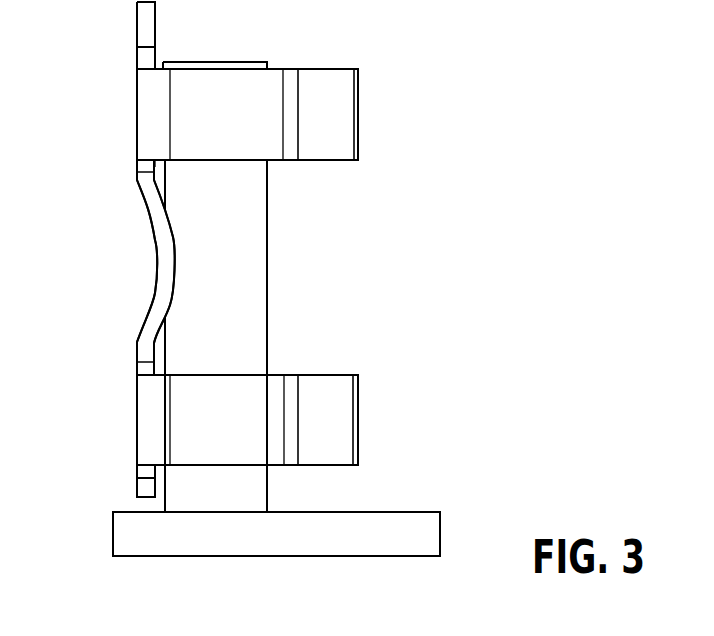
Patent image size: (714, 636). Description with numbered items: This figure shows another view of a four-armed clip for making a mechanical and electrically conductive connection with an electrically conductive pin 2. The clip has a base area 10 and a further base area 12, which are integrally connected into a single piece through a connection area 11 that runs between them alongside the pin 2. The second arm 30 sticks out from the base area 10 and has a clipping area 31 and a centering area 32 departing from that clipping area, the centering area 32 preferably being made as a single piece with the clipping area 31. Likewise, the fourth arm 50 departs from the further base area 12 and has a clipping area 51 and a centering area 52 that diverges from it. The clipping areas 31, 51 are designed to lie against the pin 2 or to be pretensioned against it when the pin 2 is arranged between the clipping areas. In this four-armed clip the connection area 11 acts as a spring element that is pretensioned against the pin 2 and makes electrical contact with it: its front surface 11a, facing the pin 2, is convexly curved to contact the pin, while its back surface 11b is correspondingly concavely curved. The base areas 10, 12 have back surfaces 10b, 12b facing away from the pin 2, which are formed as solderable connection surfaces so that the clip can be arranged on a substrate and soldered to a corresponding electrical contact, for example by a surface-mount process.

The pin 2 is at (270, 266).
The base area 10 is at (240, 84).
The back surface of base area 10b is at (138, 128).
The connection area 11 is at (200, 249).
The front surface of connection area 11a is at (168, 217).
The back surface of connection area 11b is at (147, 210).
The further base area 12 is at (241, 391).
The back surface of further base area 12b is at (138, 403).
The second arm 30 is at (346, 90).
The clipping area of second arm 31 is at (226, 92).
The centering area of second arm 32 is at (332, 115).
The fourth arm 50 is at (347, 395).
The clipping area of fourth arm 51 is at (227, 405).
The centering area of fourth arm 52 is at (332, 420).